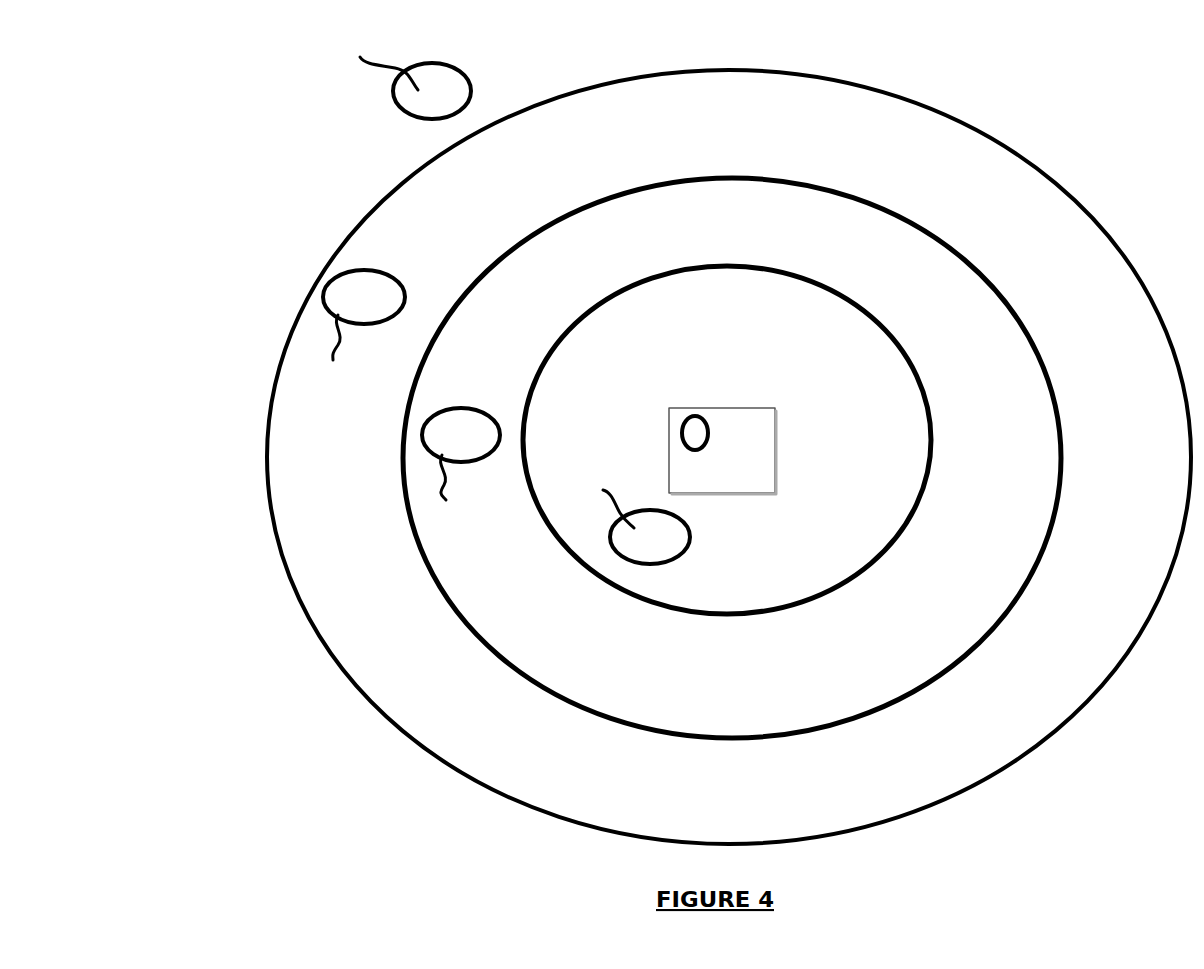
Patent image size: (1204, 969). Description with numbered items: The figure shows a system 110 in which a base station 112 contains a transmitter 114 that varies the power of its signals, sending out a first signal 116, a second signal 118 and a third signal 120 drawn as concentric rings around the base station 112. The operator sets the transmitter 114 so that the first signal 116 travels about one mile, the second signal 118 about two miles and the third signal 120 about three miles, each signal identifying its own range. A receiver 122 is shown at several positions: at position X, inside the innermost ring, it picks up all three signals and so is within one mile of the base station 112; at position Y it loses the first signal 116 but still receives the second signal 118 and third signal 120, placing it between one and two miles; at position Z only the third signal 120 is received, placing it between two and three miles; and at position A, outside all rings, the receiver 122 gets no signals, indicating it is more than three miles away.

The system 110 is at (307, 144).
The base station 112 is at (755, 437).
The transmitter 114 is at (696, 416).
The first signal 116 is at (766, 264).
The second signal 118 is at (887, 204).
The third signal 120 is at (965, 118).
The receiver 122 is at (442, 88).